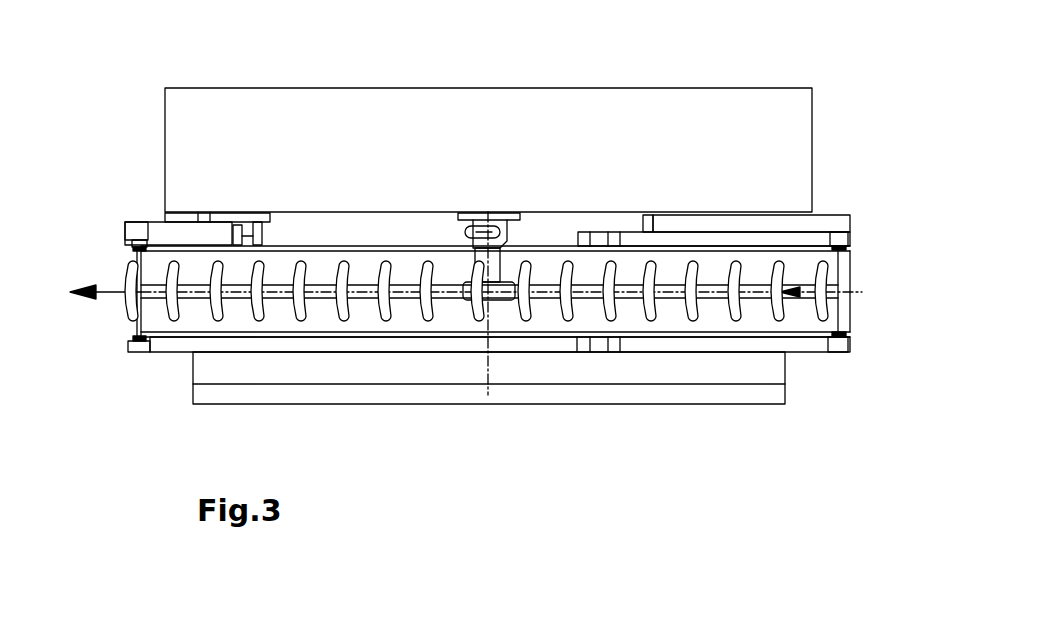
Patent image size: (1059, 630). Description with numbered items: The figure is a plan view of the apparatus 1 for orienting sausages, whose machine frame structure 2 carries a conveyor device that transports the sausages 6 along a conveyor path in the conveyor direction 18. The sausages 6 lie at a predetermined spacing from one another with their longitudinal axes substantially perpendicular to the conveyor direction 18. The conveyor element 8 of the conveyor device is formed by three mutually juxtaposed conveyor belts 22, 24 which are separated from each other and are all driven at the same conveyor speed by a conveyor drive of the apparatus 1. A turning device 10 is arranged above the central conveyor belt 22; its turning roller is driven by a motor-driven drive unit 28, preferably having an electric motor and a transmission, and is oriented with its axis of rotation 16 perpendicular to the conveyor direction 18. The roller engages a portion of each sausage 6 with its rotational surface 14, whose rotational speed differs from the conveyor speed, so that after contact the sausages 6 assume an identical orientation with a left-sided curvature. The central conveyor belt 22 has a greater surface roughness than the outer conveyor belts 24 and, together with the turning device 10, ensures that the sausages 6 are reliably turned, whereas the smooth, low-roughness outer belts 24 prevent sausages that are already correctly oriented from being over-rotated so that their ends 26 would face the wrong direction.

The apparatus 1 is at (796, 494).
The machine frame structure 2 is at (652, 115).
The sausages 6 is at (300, 320).
The conveyor element 8 is at (132, 330).
The turning device 10 is at (436, 232).
The rotational surface 14 is at (503, 287).
The axis of rotation 16 is at (490, 392).
The conveyor direction 18 is at (106, 288).
The central conveyor belt 22 is at (367, 290).
The conveyor belt 24 is at (800, 265).
The sausage end 26 is at (175, 265).
The drive unit 28 is at (498, 257).